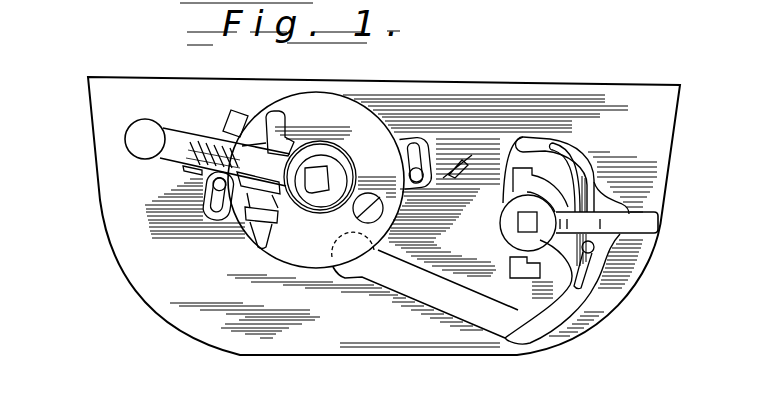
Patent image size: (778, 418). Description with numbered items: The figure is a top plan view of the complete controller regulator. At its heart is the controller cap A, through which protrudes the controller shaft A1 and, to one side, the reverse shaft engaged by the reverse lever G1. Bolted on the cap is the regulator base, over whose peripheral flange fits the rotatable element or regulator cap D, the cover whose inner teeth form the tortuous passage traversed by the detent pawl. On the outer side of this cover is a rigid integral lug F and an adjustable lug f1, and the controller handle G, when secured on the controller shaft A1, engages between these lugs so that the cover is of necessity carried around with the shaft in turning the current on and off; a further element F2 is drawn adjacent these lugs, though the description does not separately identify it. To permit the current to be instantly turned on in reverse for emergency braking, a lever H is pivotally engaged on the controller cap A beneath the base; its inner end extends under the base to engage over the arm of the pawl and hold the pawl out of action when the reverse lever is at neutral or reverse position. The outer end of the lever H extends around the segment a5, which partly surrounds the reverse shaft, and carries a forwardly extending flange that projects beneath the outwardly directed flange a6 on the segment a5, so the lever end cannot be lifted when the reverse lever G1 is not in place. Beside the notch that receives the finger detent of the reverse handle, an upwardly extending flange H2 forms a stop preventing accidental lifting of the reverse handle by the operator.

The controller cap A is at (480, 107).
The controller shaft A1 is at (323, 170).
The regulator cap D is at (307, 117).
The controller handle G is at (177, 133).
The reverse lever G1 is at (658, 235).
The rigid integral lug F is at (247, 120).
The adjustable lug f1 is at (215, 220).
The pawl F2 is at (268, 207).
The lever H is at (517, 322).
The flange H2 is at (508, 167).
The segment a5 is at (540, 183).
The outwardly directed flange a6 is at (585, 155).